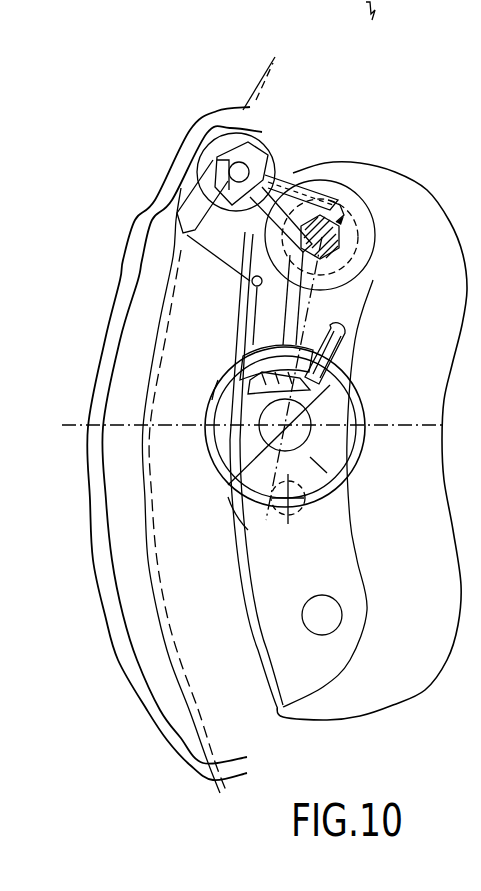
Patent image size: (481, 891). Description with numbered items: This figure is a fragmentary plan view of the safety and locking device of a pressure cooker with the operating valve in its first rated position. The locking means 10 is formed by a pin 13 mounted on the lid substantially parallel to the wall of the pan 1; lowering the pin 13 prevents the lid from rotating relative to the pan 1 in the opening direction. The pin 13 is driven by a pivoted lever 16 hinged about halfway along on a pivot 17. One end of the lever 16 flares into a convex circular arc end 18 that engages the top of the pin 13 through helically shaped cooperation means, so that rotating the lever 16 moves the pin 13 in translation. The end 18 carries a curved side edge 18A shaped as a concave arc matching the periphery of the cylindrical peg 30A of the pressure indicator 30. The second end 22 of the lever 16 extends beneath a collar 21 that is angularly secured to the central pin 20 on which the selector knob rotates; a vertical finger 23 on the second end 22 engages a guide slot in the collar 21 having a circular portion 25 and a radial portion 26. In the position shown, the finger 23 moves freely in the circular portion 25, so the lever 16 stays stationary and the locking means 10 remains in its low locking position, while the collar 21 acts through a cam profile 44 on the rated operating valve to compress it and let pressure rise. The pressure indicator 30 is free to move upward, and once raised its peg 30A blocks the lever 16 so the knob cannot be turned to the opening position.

The locking means 10 is at (214, 104).
The pan 1 is at (348, 441).
The pin 13 is at (227, 187).
The pivoted lever 16 is at (196, 240).
The pivot 17 is at (251, 283).
The circular arc end 18 is at (281, 198).
The curved side edge 18A is at (338, 212).
The second end 22 is at (265, 330).
The circular portion 25 is at (240, 386).
The collar 21 is at (224, 402).
The vertical finger 23 is at (232, 481).
The central pin 20 is at (229, 483).
The cam profile 44 is at (243, 508).
The radial portion 26 is at (343, 345).
The pressure indicator 30 is at (340, 236).
The cylindrical peg 30A is at (355, 245).